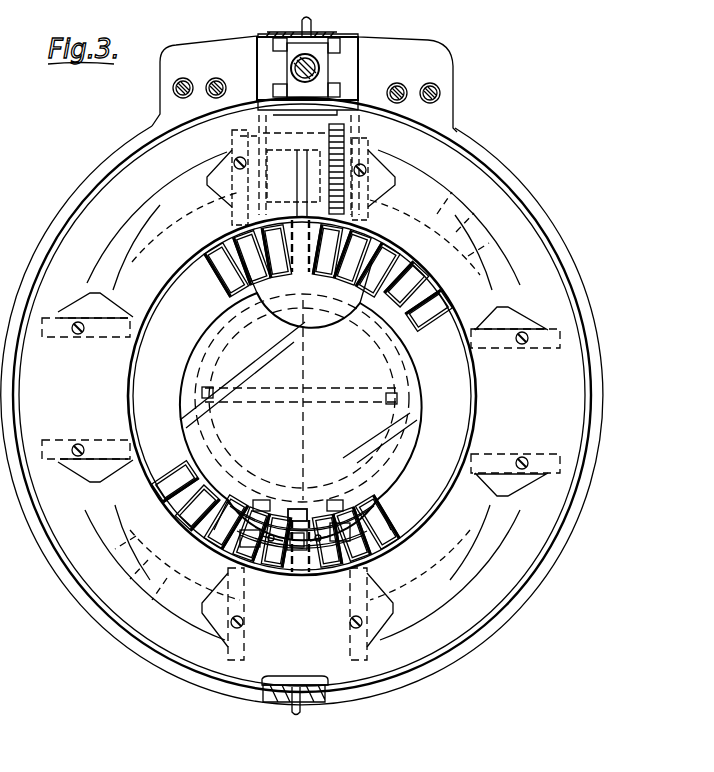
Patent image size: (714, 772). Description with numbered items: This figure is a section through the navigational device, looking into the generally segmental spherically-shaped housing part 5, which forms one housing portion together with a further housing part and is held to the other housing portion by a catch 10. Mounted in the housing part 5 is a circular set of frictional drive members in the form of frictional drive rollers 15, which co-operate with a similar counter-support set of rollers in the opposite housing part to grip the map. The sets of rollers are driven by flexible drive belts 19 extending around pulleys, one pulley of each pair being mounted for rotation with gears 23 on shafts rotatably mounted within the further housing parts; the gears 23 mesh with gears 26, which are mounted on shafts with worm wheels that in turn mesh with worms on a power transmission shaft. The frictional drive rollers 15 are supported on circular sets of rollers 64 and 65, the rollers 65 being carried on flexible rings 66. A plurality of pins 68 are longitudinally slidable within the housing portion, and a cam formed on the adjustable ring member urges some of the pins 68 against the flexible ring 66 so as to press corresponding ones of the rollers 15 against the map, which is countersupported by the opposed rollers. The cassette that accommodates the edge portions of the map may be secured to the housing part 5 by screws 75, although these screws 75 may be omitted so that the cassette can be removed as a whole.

The housing part 5 is at (505, 618).
The catch 10 is at (332, 44).
The frictional drive rollers 15 is at (378, 248).
The flexible drive belts 19 is at (232, 226).
The gears 23 is at (340, 192).
The gears 26 is at (338, 126).
The rollers 64 is at (296, 510).
The rollers 65 is at (295, 552).
The flexible rings 66 is at (272, 546).
The pins 68 is at (324, 540).
The screws 75 is at (79, 442).